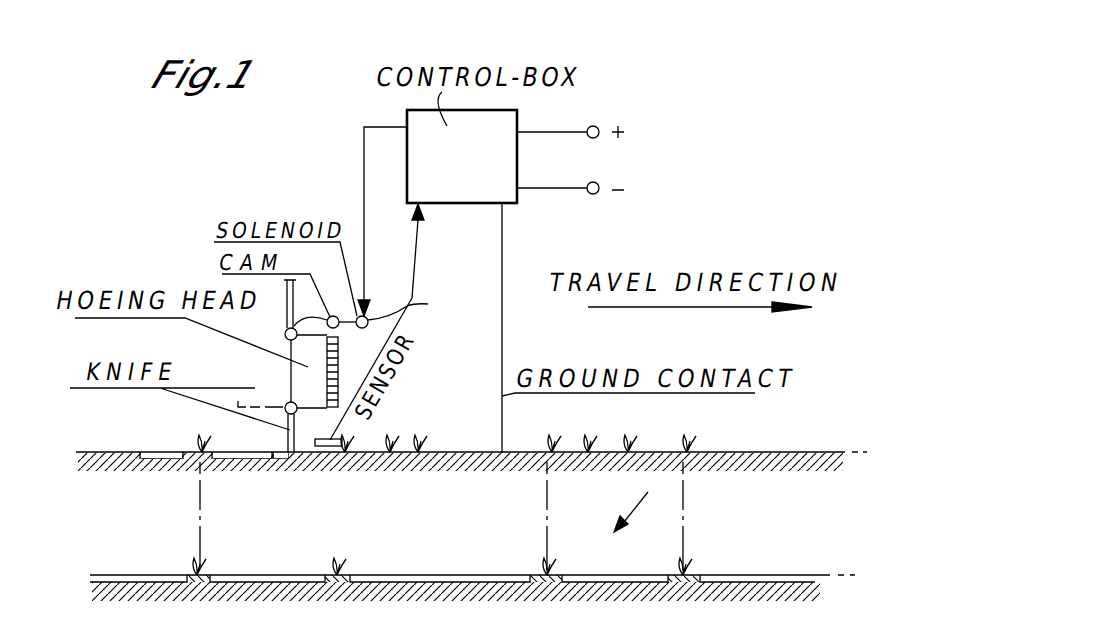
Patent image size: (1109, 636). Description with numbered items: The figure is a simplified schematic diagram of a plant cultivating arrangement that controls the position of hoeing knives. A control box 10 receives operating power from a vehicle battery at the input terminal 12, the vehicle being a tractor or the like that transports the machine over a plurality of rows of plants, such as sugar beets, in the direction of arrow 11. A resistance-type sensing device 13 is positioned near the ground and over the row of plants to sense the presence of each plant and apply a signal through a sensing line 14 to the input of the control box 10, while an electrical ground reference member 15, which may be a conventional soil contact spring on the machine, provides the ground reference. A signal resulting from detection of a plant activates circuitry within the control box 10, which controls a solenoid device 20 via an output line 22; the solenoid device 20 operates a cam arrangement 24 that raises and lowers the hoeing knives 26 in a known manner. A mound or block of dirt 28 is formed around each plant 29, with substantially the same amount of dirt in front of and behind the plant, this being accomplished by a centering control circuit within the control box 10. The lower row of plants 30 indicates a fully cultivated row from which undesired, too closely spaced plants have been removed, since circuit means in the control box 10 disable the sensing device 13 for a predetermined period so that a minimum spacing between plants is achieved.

The control box 10 is at (488, 192).
The arrow 11 is at (622, 312).
The input terminal 12 is at (597, 140).
The resistance-type sensing device 13 is at (344, 438).
The sensing line 14 is at (396, 251).
The electrical ground reference member 15 is at (502, 378).
The solenoid device 20 is at (378, 308).
The output line 22 is at (364, 160).
The cam arrangement 24 is at (284, 330).
The hoeing knives 26 is at (270, 458).
The mound or block of dirt 28 is at (188, 452).
The plant 29 is at (200, 440).
The lower row of plants 30 is at (640, 499).